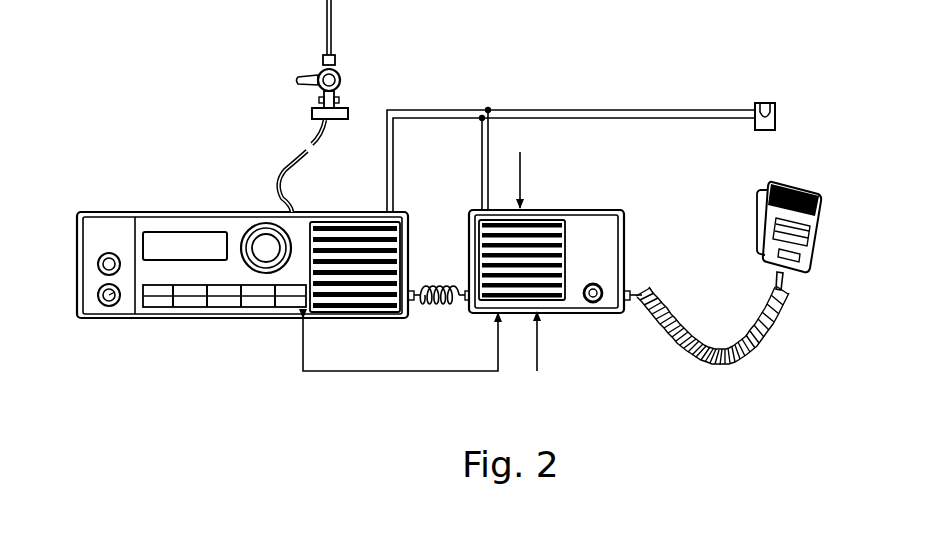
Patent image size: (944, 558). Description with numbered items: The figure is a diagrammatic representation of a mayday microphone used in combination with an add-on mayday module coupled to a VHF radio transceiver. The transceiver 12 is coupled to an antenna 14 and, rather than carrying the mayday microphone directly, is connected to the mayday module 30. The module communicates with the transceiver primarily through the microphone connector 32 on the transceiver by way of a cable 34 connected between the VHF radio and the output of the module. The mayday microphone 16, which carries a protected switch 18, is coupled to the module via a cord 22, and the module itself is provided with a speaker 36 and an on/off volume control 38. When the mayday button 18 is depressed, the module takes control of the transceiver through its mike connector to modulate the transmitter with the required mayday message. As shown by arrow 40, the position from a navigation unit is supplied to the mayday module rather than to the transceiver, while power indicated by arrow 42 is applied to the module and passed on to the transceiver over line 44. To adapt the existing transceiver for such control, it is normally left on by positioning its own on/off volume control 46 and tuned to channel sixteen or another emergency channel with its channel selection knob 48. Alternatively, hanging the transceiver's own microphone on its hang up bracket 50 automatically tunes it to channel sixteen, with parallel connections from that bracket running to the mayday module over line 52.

The VHF radio transceiver 12 is at (104, 206).
The antenna 14 is at (332, 22).
The mayday microphone 16 is at (793, 184).
The protected switch 18 is at (768, 228).
The cord 22 is at (776, 337).
The mayday module 30 is at (621, 207).
The microphone connector 32 is at (415, 288).
The cable 34 is at (427, 289).
The speaker 36 is at (556, 230).
The on/off volume control 38 is at (600, 300).
The arrow 40 is at (522, 165).
The arrow 42 is at (538, 335).
The line 44 is at (382, 371).
The on/off volume control 46 is at (111, 306).
The channel selection knob 48 is at (262, 242).
The microphone hang up bracket 50 is at (773, 112).
The line 52 is at (582, 110).